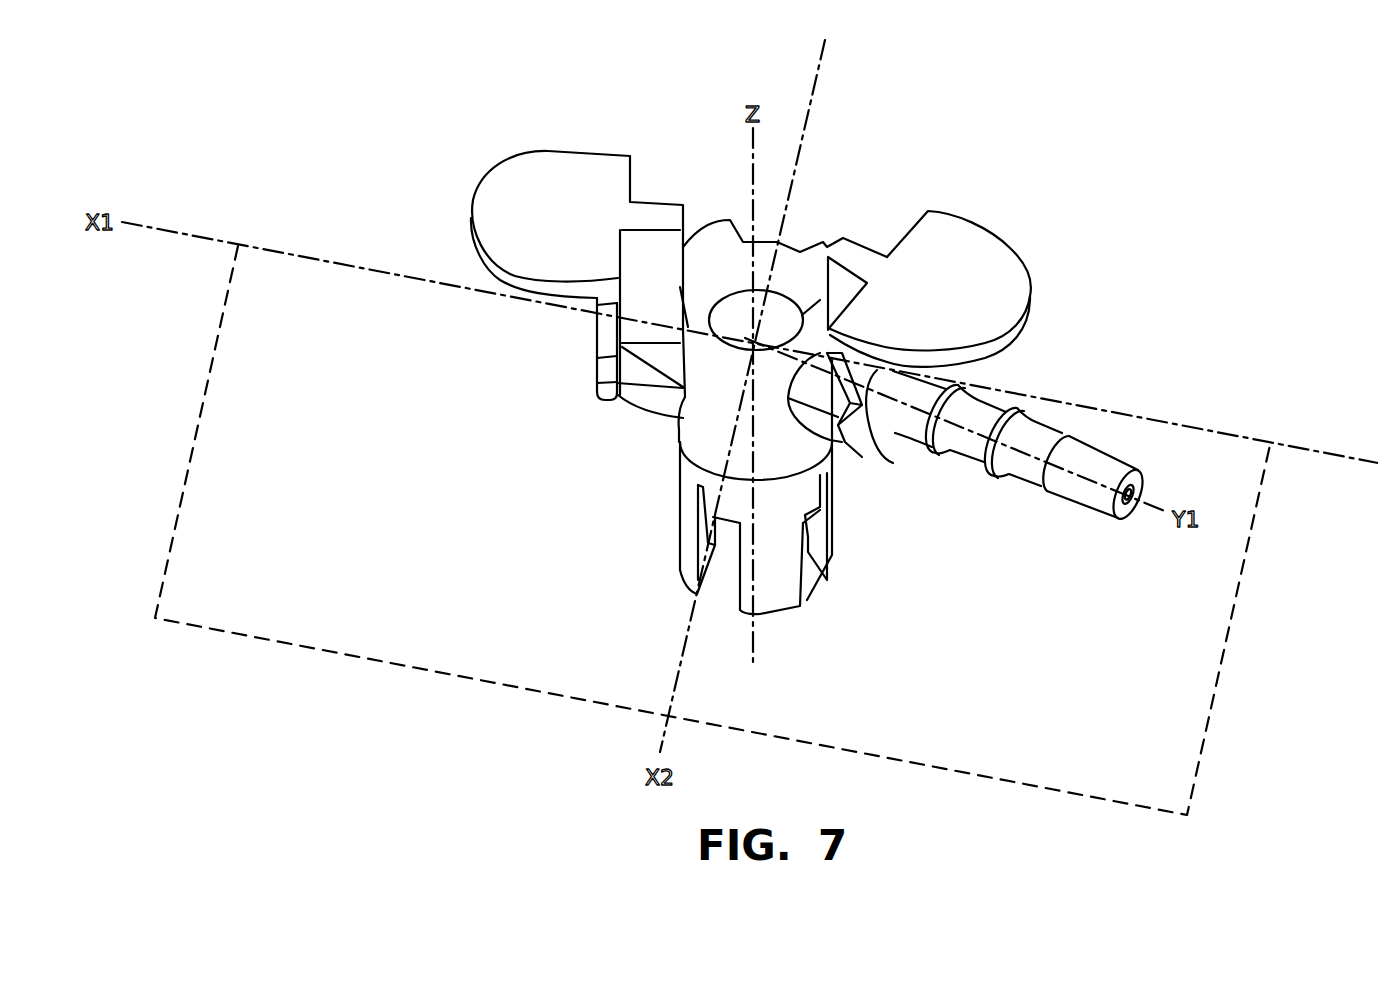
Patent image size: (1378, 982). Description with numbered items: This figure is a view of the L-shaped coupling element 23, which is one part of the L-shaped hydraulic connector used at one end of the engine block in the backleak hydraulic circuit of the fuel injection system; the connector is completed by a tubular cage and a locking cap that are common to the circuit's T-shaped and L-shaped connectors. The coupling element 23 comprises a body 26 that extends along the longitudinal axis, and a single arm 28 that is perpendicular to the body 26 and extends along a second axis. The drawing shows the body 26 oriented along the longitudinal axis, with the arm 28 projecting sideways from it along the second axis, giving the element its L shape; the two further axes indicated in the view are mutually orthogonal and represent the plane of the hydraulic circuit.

The L-shaped coupling element 23 is at (596, 480).
The body 26 is at (818, 547).
The arm 28 is at (1023, 470).